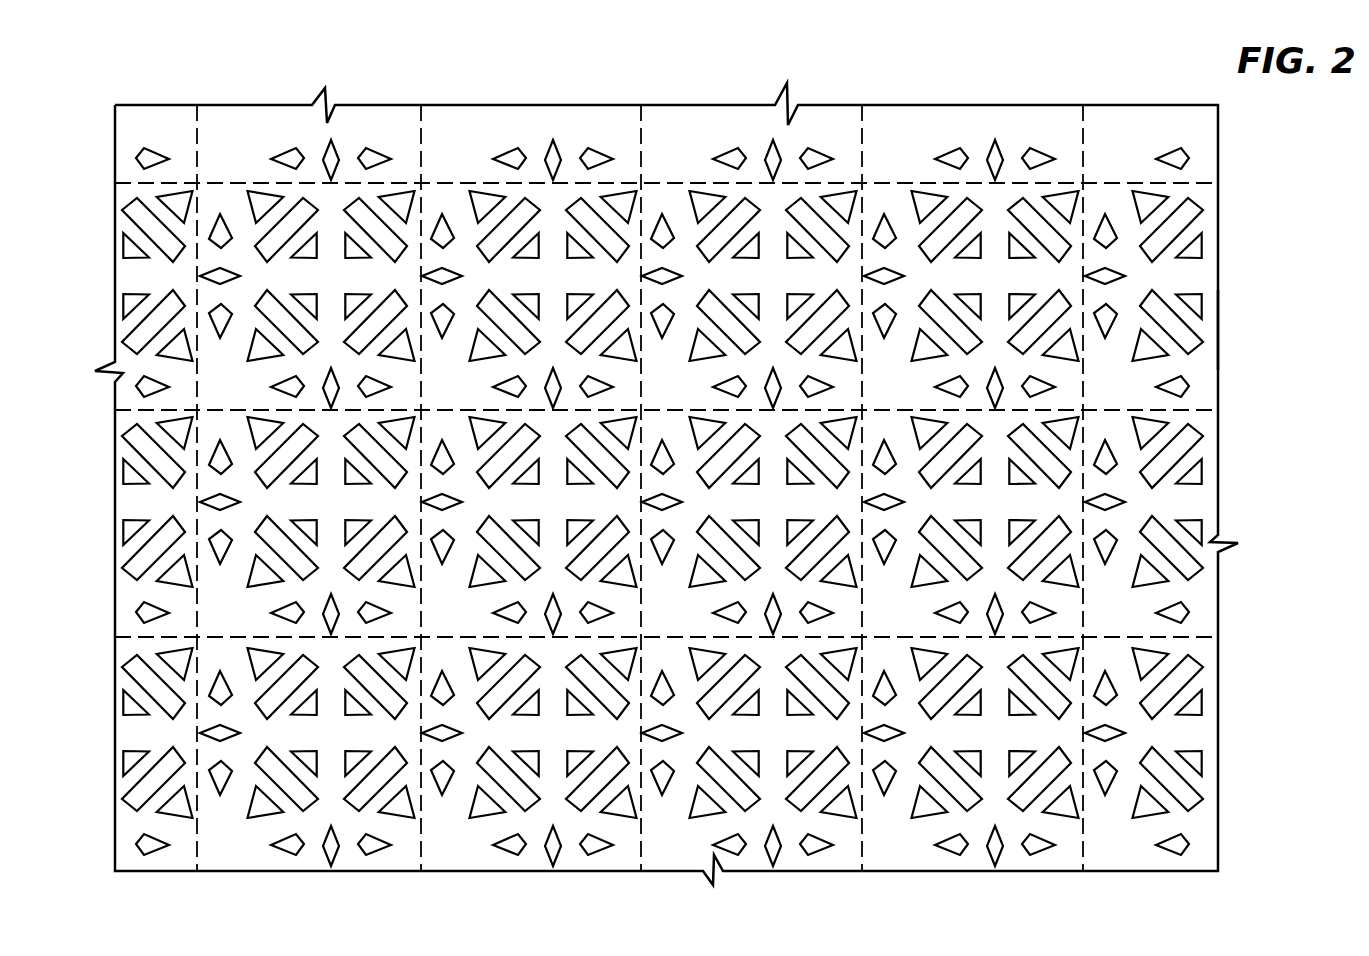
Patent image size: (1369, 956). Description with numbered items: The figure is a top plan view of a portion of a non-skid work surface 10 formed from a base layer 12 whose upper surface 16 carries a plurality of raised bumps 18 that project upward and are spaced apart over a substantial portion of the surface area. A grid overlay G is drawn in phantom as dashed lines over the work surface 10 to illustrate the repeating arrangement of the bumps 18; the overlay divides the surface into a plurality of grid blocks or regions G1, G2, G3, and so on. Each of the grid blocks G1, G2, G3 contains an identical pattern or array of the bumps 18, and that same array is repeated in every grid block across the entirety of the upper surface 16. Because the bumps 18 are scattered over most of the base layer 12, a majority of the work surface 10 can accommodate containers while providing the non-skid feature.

The non-skid work surface 10 is at (1228, 253).
The base layer 12 is at (1220, 328).
The upper surface 16 is at (1138, 122).
The bumps 18 is at (952, 155).
The grid overlay G is at (432, 150).
The grid block G1 is at (231, 183).
The grid block G2 is at (613, 182).
The grid block G3 is at (695, 182).